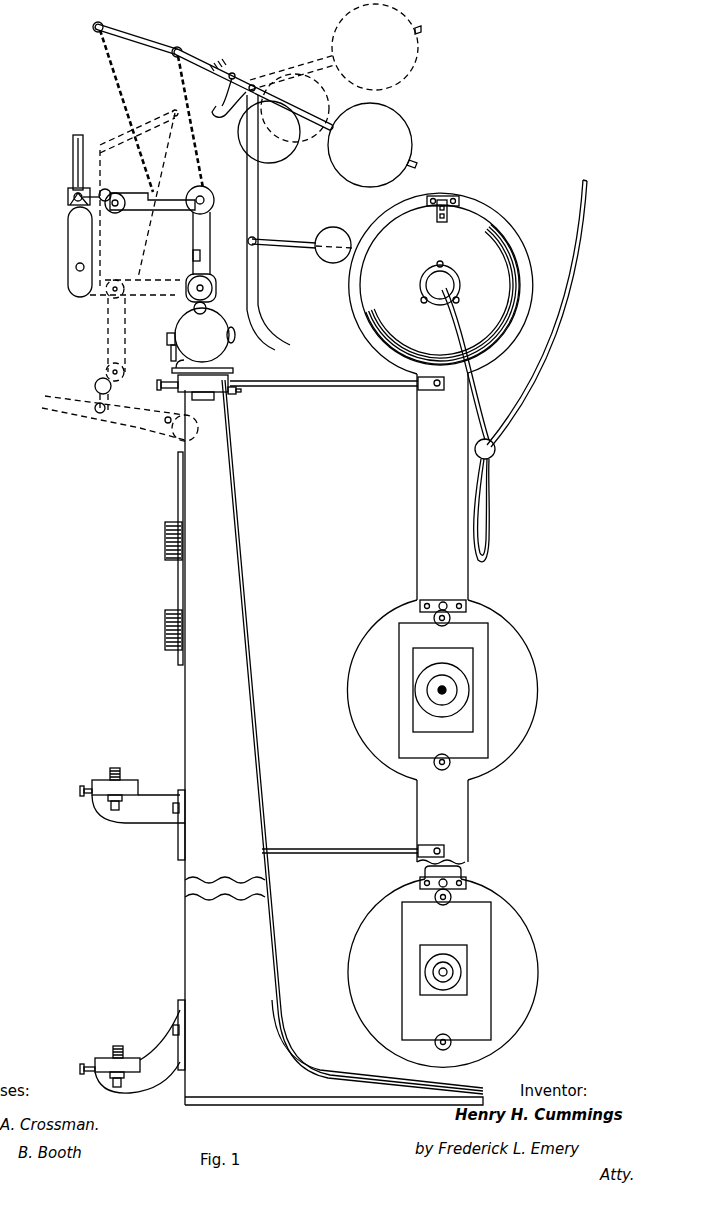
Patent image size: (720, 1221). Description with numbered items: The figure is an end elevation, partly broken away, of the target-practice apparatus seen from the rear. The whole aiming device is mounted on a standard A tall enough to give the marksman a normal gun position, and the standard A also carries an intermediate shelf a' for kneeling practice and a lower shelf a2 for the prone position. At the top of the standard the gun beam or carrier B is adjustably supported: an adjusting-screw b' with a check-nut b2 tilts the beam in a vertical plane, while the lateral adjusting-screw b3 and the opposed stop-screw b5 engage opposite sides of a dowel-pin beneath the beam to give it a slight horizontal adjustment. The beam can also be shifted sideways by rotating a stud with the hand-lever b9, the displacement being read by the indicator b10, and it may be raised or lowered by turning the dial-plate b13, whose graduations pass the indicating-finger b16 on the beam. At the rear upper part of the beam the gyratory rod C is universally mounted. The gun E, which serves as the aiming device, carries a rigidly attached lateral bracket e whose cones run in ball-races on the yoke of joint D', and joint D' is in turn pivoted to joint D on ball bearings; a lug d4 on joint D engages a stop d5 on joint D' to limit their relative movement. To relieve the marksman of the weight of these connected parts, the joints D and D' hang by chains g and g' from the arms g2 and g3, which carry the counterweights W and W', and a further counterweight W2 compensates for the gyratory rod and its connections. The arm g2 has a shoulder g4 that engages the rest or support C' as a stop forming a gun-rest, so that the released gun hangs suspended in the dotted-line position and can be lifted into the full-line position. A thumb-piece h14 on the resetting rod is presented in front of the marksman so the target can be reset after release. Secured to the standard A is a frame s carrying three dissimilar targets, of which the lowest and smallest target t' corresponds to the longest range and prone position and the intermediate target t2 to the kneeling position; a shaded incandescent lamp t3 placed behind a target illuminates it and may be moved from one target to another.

The standard A is at (324, 742).
The intermediate shelf a' is at (121, 822).
The lower shelf a2 is at (172, 1058).
The gun beam or carrier B is at (224, 348).
The adjusting-screw b' is at (158, 710).
The check-nut b2 is at (108, 800).
The lateral adjusting-screw b3 is at (82, 790).
The stop-screw b5 is at (236, 392).
The hand-lever b9 is at (171, 352).
The indicator b10 is at (170, 333).
The dial-plate b13 is at (262, 383).
The indicating-finger b16 is at (175, 366).
The gyratory rod C is at (212, 290).
The rest or support C' is at (275, 222).
The joint D is at (137, 313).
The joint D' is at (134, 303).
The lug d4 is at (192, 122).
The stop d5 is at (178, 200).
The gun E is at (70, 247).
The bracket e is at (107, 189).
The chain g is at (180, 167).
The chain g' is at (106, 160).
The arm g2 is at (205, 64).
The arm g3 is at (128, 30).
The shoulder g4 is at (226, 100).
The thumb-piece h14 is at (207, 311).
The frame s is at (522, 668).
The target t' is at (454, 966).
The target t2 is at (487, 745).
The shaded incandescent lamp t3 is at (487, 246).
The counterweight W is at (394, 95).
The counterweight W' is at (283, 118).
The counterweight W2 is at (335, 236).